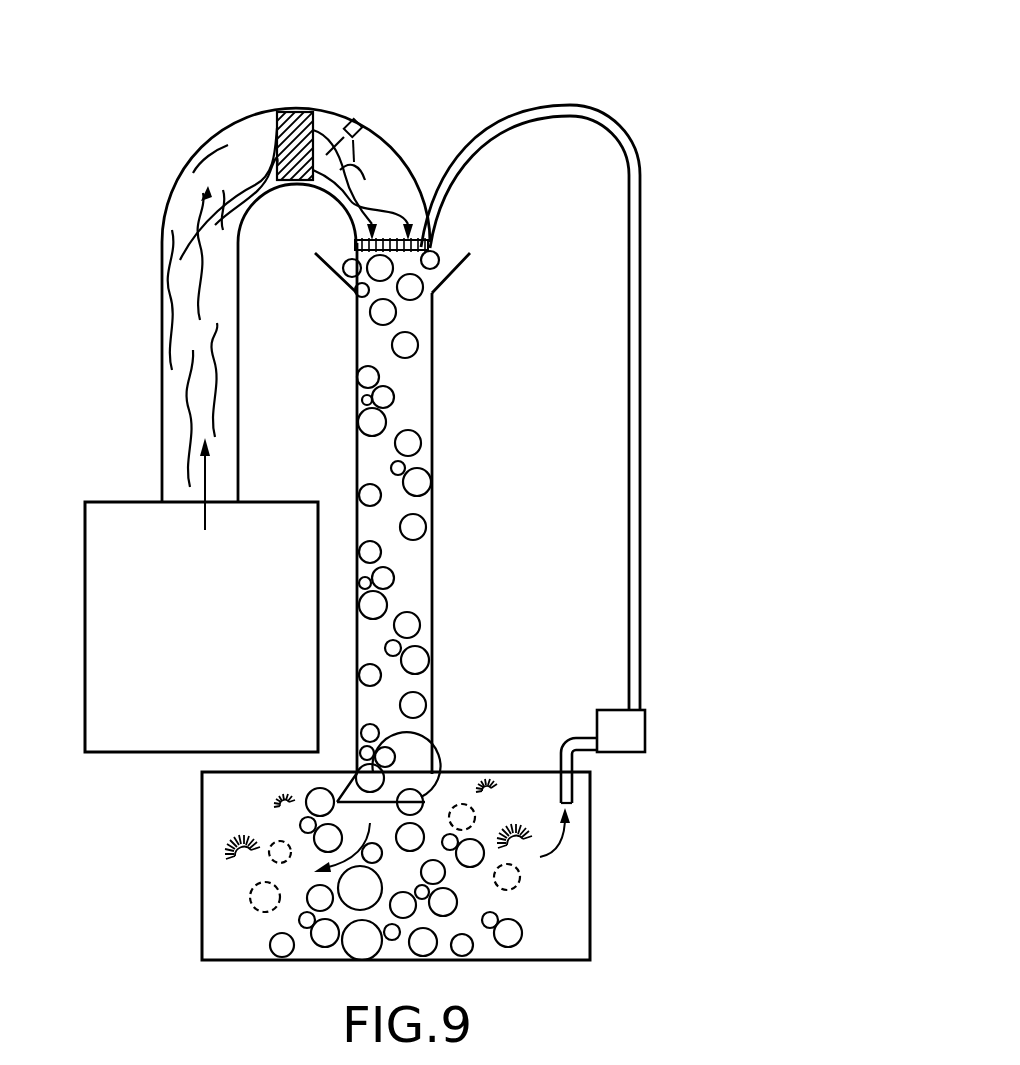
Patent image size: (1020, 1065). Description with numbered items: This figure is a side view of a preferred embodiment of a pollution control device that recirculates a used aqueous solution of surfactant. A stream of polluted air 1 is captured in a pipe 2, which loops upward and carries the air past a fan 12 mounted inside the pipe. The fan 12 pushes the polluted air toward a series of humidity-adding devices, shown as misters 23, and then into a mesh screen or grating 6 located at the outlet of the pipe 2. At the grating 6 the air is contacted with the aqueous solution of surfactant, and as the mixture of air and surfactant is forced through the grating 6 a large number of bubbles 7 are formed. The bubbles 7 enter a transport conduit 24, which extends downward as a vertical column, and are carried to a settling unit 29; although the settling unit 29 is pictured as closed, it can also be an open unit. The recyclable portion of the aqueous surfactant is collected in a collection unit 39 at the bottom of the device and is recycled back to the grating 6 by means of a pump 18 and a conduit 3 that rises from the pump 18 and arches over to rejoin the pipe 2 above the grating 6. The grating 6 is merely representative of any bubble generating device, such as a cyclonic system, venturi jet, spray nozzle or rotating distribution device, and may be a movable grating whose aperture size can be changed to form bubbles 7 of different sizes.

The stream of polluted air 1 is at (205, 518).
The pipe 2 is at (176, 164).
The conduit 3 is at (652, 291).
The mesh screen or grating 6 is at (447, 242).
The bubbles 7 is at (447, 338).
The fan 12 is at (299, 104).
The pump 18 is at (657, 724).
The misters 23 is at (372, 100).
The transport conduit 24 is at (450, 392).
The settling unit 29 is at (450, 543).
The collection unit 39 is at (592, 892).